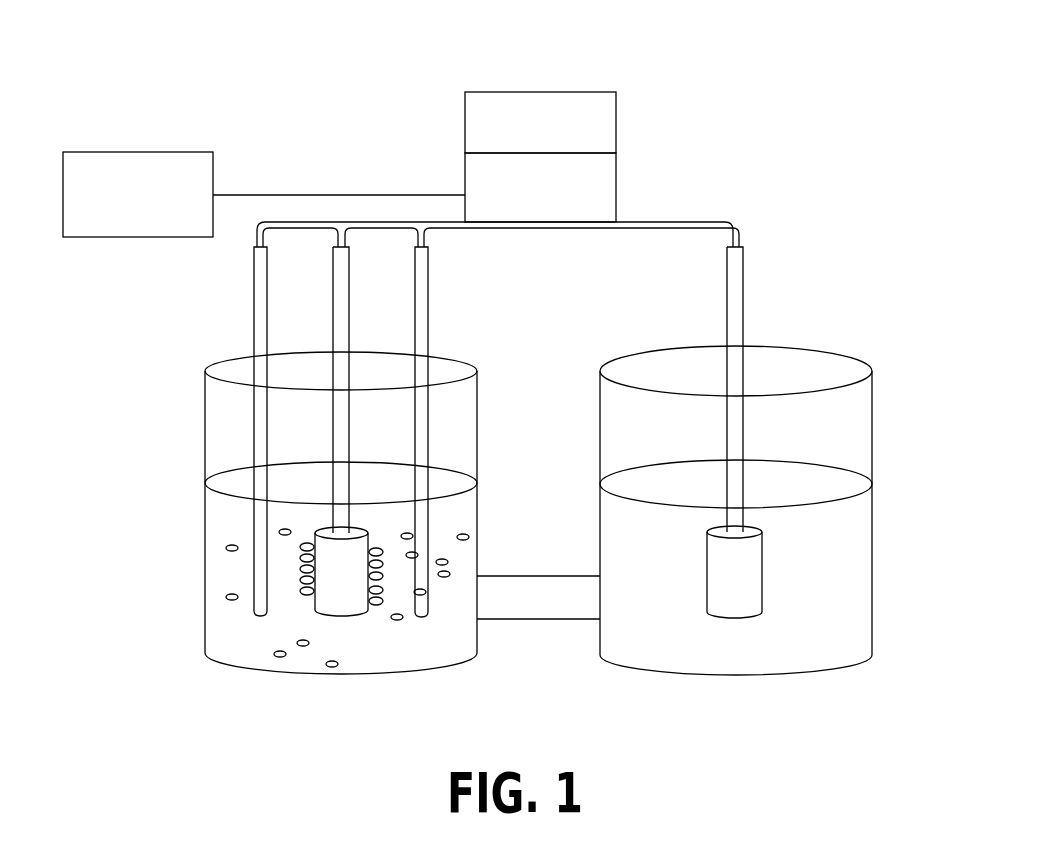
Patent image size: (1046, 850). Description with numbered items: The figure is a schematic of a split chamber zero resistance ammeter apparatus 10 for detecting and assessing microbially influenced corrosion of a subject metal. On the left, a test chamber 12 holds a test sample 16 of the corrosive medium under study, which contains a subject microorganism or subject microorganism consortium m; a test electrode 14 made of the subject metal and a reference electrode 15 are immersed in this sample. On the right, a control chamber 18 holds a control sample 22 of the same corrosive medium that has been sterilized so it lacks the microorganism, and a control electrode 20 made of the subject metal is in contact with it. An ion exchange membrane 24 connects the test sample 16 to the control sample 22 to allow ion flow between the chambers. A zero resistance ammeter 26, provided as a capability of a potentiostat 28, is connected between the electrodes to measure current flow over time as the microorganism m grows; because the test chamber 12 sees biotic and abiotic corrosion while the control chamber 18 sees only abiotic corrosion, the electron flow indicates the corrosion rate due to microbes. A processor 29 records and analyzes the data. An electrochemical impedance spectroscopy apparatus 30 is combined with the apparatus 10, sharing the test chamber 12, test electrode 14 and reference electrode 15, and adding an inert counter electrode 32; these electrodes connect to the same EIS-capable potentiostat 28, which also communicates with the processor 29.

The split chamber zero resistance ammeter apparatus 10 is at (758, 153).
The test chamber 12 is at (477, 388).
The test electrode 14 is at (331, 546).
The reference electrode 15 is at (255, 530).
The test sample 16 is at (443, 487).
The control chamber 18 is at (872, 393).
The control electrode 20 is at (748, 556).
The control sample 22 is at (840, 492).
The ion exchange membrane 24 is at (520, 576).
The zero resistance ammeter 26 is at (585, 153).
The potentiostat 28 is at (463, 163).
The processor 29 is at (112, 152).
The electrochemical impedance spectroscopy apparatus 30 is at (335, 112).
The counter electrode 32 is at (428, 296).
The subject microorganism or subject microorganism consortium m is at (302, 546).